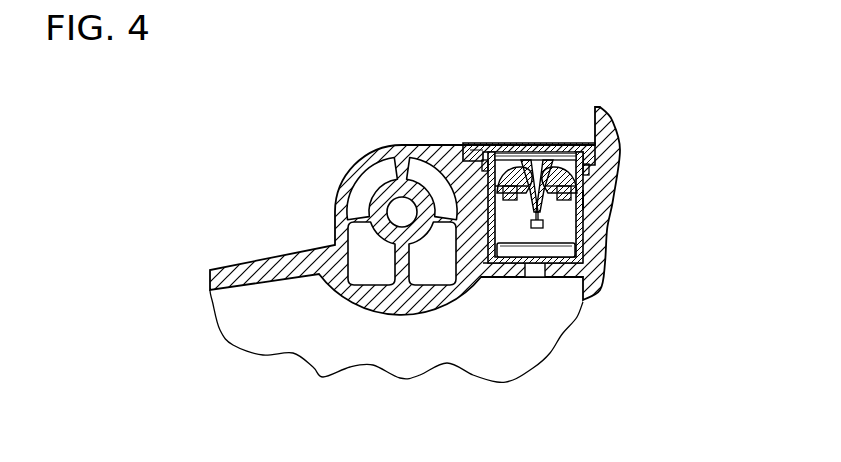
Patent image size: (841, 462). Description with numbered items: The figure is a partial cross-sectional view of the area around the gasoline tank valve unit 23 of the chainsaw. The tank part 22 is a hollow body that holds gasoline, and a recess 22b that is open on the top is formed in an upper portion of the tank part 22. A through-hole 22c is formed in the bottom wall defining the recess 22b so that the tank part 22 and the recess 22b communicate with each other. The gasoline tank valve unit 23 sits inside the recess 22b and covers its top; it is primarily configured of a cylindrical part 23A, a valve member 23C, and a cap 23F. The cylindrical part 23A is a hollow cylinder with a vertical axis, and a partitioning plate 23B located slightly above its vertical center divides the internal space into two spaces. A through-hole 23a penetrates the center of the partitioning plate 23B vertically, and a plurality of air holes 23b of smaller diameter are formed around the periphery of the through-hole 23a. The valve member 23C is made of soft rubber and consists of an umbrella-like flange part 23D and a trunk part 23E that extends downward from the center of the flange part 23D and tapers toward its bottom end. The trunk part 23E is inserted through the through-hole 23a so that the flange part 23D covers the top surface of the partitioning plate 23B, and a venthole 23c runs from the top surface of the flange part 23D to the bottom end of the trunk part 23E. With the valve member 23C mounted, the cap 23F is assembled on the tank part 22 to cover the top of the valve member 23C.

The tank part 22 is at (343, 192).
The recess 22b is at (500, 267).
The through-hole 22c is at (543, 278).
The gasoline tank valve unit 23 is at (543, 159).
The cylindrical part 23A is at (583, 223).
The partitioning plate 23B is at (447, 145).
The valve member 23C is at (588, 148).
The flange part 23D is at (515, 167).
The trunk part 23E is at (583, 265).
The cap 23F is at (487, 150).
The through-hole 23a is at (562, 162).
The air holes 23b is at (583, 200).
The venthole 23c is at (543, 168).